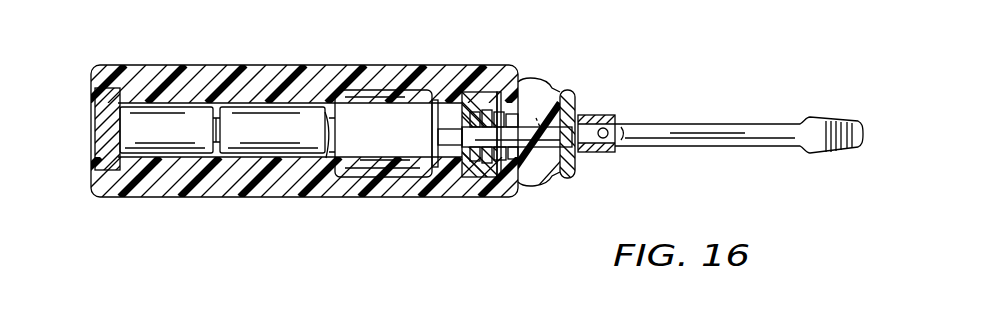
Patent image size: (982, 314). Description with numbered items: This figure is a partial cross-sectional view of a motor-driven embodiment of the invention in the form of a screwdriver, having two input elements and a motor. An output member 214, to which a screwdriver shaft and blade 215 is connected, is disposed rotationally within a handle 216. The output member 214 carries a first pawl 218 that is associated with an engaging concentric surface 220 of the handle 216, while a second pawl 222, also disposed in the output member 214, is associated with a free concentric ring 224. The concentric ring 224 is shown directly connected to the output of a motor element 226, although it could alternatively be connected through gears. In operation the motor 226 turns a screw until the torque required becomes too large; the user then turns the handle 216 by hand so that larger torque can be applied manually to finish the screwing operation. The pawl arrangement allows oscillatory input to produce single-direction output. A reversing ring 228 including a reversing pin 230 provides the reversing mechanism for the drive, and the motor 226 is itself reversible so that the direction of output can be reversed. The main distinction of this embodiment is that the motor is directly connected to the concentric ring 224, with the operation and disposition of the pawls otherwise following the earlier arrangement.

The handle 216 is at (232, 72).
The motor element 226 is at (385, 162).
The free concentric ring 224 is at (477, 175).
The second pawl 222 is at (490, 92).
The engaging concentric surface 220 is at (508, 165).
The output member 214 is at (540, 178).
The reversing ring 228 is at (578, 170).
The first pawl 218 is at (517, 88).
The reversing pin 230 is at (536, 118).
The screwdriver shaft and blade 215 is at (700, 122).